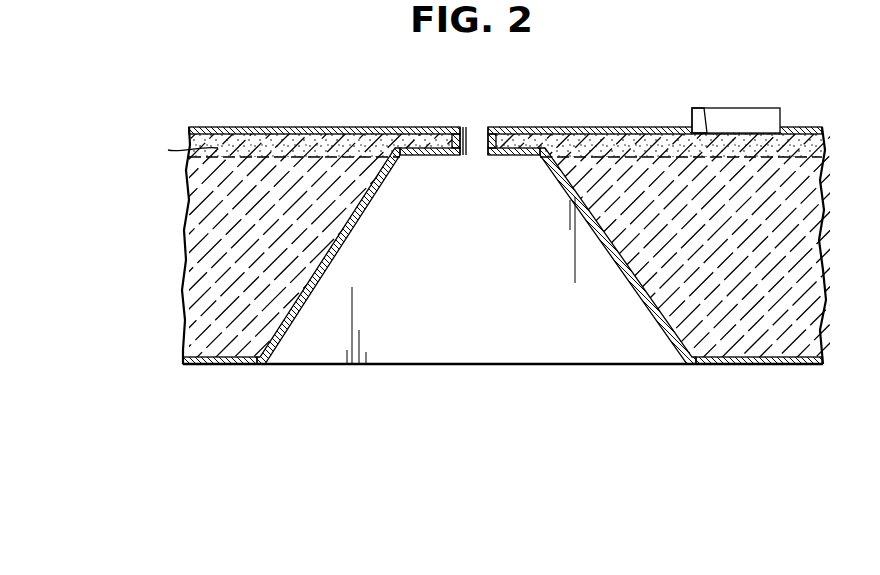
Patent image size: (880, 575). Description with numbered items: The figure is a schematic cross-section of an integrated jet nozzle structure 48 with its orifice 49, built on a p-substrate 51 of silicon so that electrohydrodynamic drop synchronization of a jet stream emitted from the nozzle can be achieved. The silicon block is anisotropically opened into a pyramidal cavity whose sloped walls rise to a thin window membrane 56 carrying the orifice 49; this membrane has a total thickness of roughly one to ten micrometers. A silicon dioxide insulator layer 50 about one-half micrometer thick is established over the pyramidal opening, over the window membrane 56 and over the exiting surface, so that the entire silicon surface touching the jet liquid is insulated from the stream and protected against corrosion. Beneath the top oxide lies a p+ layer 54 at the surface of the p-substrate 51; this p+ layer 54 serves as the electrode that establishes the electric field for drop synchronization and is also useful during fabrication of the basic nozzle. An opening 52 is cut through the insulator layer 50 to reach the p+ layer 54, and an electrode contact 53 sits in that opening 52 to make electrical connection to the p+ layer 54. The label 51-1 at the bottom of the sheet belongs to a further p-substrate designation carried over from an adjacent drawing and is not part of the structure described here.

The jet nozzle structure 48 is at (436, 108).
The orifice 49 is at (478, 132).
The insulator layer 50 is at (328, 127).
The p-substrate 51 is at (194, 300).
The opening 52 is at (703, 108).
The electrode 53 is at (766, 110).
The p+ layer 54 is at (190, 165).
The window membrane 56 is at (445, 164).
The p-substrate (second figure) 51-1 is at (168, 557).